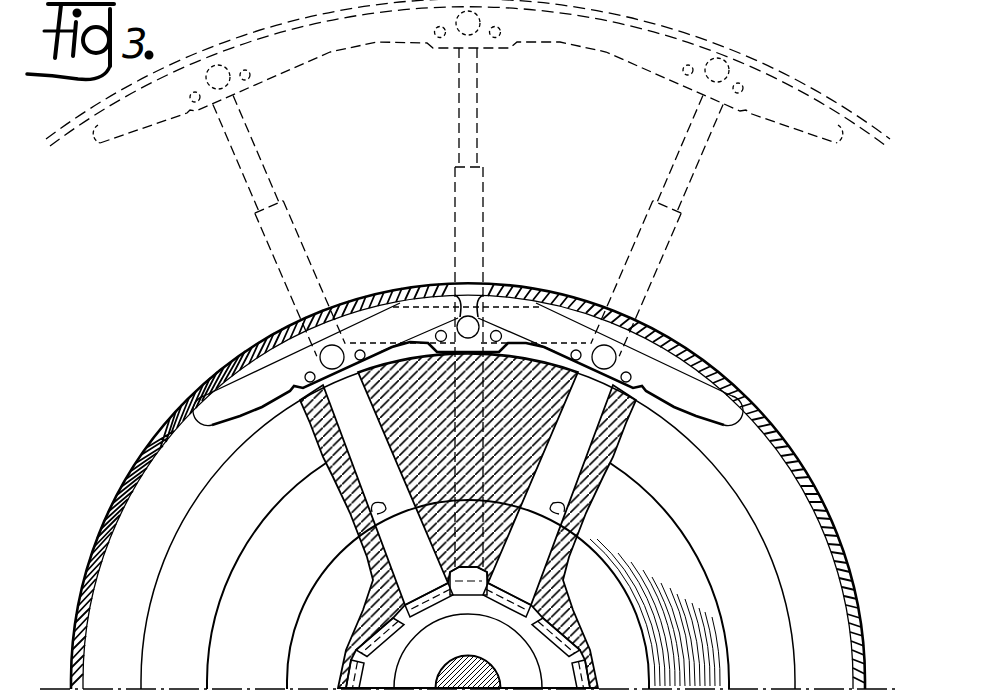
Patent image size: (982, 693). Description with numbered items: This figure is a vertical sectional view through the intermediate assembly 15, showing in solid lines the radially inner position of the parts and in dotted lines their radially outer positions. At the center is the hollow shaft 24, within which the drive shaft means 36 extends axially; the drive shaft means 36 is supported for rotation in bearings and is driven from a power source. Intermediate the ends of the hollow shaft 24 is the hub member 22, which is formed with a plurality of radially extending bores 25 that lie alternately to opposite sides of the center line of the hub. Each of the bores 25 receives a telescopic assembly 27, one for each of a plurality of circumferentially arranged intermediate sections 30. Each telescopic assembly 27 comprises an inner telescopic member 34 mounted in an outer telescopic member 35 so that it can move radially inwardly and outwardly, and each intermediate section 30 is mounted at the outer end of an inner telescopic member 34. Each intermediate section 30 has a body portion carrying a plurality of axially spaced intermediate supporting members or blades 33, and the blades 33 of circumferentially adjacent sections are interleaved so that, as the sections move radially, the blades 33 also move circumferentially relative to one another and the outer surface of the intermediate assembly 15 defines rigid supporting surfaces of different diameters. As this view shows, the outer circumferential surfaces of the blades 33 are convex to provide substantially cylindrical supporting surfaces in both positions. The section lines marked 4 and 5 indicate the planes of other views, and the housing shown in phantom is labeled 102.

The housing shell 102 is at (760, 63).
The intermediate assembly 15 is at (208, 540).
The hub member 22 is at (280, 614).
The telescopic assemblies 27 is at (363, 443).
The hollow shaft 24 is at (526, 640).
The drive shaft means 36 is at (473, 662).
The intermediate sections 30 is at (253, 387).
The intermediate supporting members or blades 33 is at (367, 48).
The inner telescopic member 34 is at (483, 129).
The outer telescopic member 35 is at (484, 207).
The radially extending bores 25 is at (357, 523).
The section line 4- 4 is at (153, 403).
The section line 5- 5 is at (43, 133).